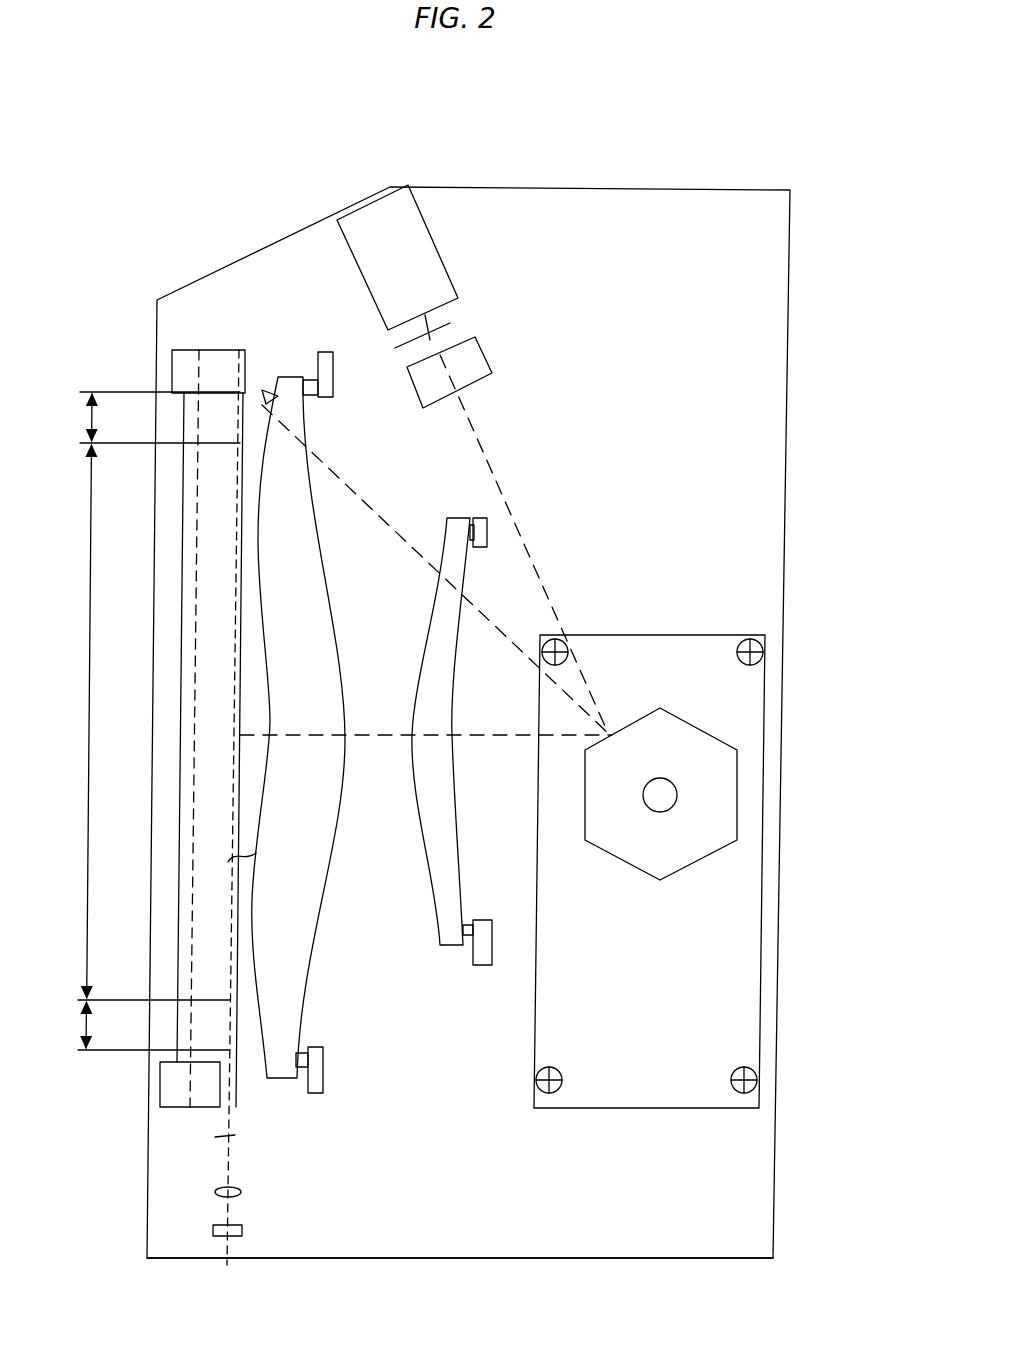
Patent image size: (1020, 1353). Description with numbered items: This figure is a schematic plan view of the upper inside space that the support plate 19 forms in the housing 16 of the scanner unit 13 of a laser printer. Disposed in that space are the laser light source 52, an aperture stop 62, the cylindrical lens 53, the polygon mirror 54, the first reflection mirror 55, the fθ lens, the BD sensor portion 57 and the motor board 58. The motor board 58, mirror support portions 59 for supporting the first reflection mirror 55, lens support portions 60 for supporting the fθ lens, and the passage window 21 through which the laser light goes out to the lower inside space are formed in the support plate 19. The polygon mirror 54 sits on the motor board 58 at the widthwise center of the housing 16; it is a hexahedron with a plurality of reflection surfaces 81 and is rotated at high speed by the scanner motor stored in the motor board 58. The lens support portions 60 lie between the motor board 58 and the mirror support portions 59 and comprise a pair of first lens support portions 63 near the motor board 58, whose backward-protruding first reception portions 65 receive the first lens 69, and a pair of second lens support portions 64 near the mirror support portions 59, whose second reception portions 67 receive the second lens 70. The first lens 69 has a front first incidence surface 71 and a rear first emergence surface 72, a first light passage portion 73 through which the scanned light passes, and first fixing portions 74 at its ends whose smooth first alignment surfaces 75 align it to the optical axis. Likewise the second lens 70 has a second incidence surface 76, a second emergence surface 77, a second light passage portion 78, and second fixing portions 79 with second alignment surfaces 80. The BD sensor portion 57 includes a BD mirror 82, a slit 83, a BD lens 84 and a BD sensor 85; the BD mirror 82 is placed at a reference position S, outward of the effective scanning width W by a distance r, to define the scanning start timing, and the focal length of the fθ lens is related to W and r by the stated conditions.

The scanner unit 13 is at (243, 213).
The housing 16 is at (778, 1152).
The support plate 19 is at (588, 1238).
The passage window 21 is at (235, 576).
The laser light source 52 is at (447, 258).
The cylindrical lens 53 is at (490, 360).
The polygon mirror 54 is at (690, 730).
The first reflection mirror 55 is at (180, 806).
The BD sensor portion 57 is at (185, 1246).
The motor board 58 is at (649, 835).
The mirror support portions 59 is at (183, 348).
The lens support portions 60 is at (371, 745).
The aperture stop 62 is at (462, 325).
The first lens support portions 63 is at (490, 522).
The second lens support portions 64 is at (335, 372).
The first reception portions 65 is at (483, 550).
The second reception portions 67 is at (318, 398).
The first lens 69 is at (424, 798).
The second lens 70 is at (312, 886).
The first incidence surface 71 is at (460, 786).
The first emergence surface 72 is at (416, 692).
The first light passage portion 73 is at (458, 709).
The first fixing portions 74 is at (440, 540).
The first alignment surfaces 75 is at (478, 518).
The second incidence surface 76 is at (337, 655).
The second emergence surface 77 is at (226, 860).
The second light passage portion 78 is at (373, 793).
The second fixing portions 79 is at (273, 393).
The second alignment surfaces 80 is at (318, 375).
The reflection surfaces 81 is at (625, 863).
The BD mirror 82 is at (236, 390).
The slit 83 is at (237, 1136).
The BD lens 84 is at (240, 1198).
The BD sensor 85 is at (230, 1237).
The reference position S is at (243, 390).
The distance from an end of the effective scanning width to the reference position r is at (151, 721).
The effective scanning width W is at (71, 721).